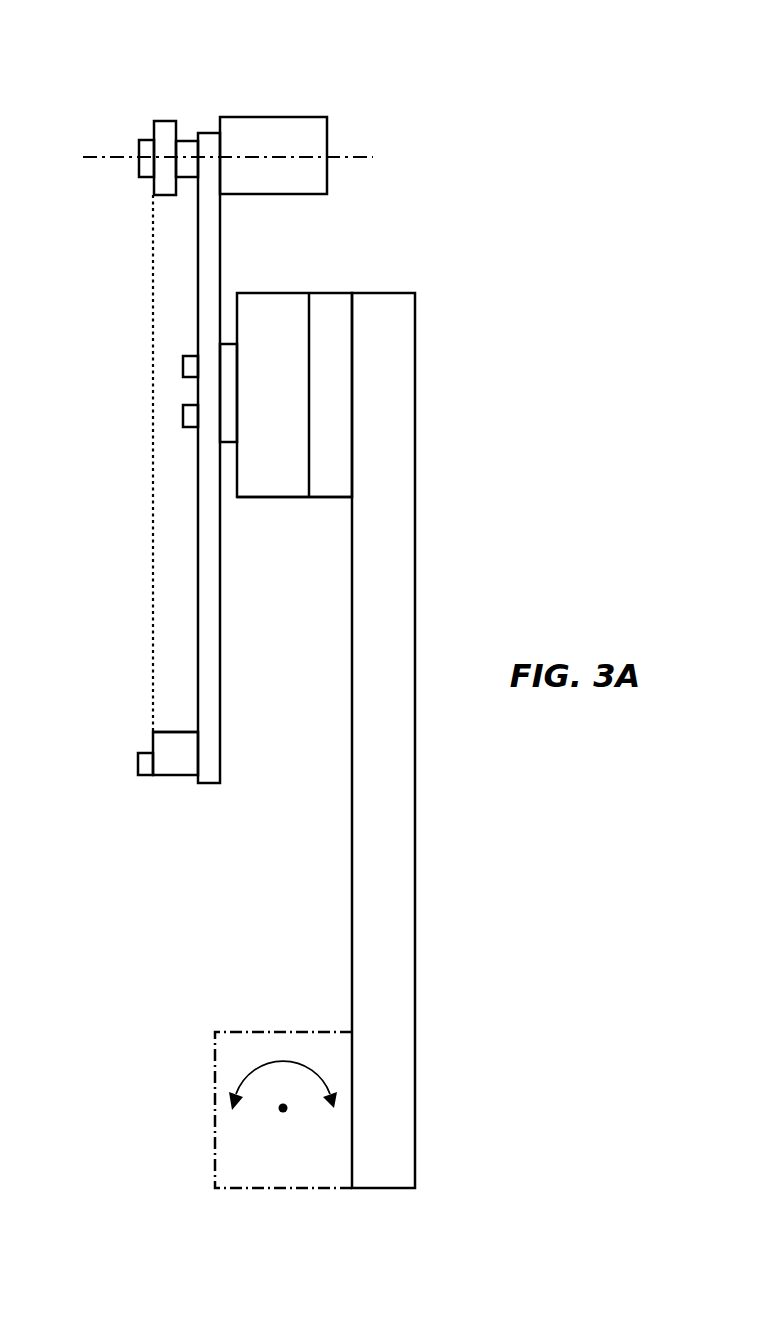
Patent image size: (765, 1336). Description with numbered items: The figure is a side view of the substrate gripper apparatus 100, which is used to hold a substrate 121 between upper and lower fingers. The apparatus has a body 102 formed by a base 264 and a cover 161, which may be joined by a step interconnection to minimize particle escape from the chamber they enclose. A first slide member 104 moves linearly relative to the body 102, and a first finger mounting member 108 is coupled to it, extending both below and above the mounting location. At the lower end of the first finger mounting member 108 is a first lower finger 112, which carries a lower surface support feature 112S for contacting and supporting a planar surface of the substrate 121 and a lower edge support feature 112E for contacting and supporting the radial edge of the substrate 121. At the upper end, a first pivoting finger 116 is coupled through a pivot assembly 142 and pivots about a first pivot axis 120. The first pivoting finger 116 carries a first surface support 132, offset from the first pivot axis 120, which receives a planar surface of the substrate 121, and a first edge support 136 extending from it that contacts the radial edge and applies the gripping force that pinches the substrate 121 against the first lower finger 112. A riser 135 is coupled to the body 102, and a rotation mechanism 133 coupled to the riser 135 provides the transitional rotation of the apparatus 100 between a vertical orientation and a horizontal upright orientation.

The substrate gripper apparatus 100 is at (376, 64).
The body 102 is at (305, 512).
The first slide member 104 is at (228, 392).
The first finger mounting member 108 is at (198, 302).
The first lower finger 112 is at (150, 777).
The lower surface support feature 112S is at (150, 735).
The lower edge support feature 112E is at (150, 751).
The first pivoting finger 116 is at (162, 110).
The first pivot axis 120 is at (112, 156).
The substrate 121 is at (138, 579).
The first surface support 132 is at (154, 188).
The rotation mechanism 133 is at (213, 1087).
The riser 135 is at (415, 383).
The first edge support 136 is at (138, 168).
The pivot assembly 142 is at (267, 118).
The cover 161 is at (270, 293).
The base 264 is at (333, 293).